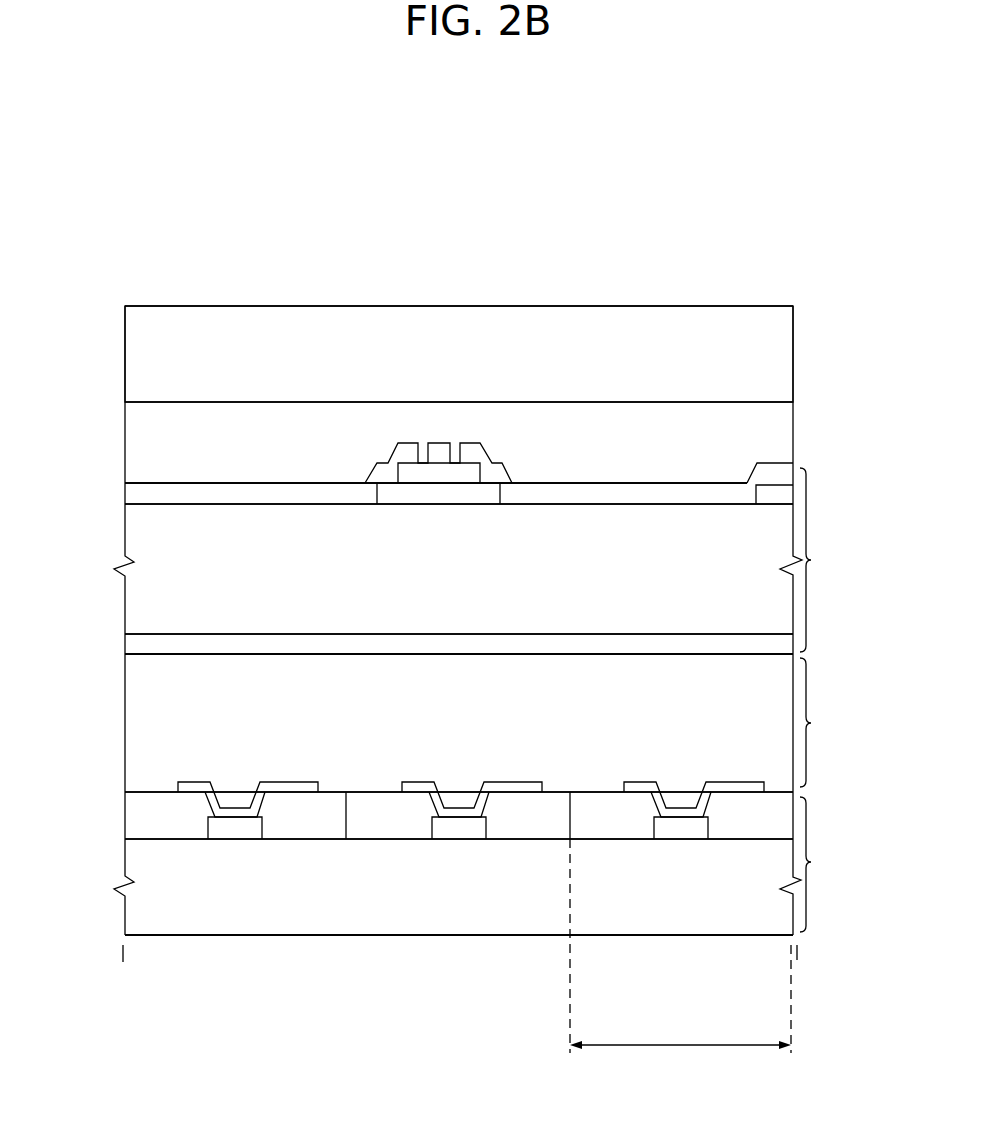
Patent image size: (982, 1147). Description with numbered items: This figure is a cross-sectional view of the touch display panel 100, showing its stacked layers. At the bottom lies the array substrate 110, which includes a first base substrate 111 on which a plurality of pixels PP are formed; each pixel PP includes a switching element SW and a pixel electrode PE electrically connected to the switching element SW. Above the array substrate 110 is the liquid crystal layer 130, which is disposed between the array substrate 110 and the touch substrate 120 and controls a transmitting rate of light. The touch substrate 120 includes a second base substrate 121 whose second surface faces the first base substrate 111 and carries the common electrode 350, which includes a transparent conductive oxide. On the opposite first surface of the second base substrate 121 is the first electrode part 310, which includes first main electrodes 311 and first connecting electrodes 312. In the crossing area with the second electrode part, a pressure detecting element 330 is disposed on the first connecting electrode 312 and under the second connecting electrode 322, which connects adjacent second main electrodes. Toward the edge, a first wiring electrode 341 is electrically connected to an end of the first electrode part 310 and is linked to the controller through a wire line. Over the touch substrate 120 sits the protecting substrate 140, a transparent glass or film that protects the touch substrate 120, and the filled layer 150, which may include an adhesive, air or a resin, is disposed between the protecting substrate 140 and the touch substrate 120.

The touch display panel 100 is at (468, 170).
The array substrate 110 is at (488, 863).
The first base substrate 111 is at (272, 890).
The touch substrate 120 is at (488, 561).
The second base substrate 121 is at (243, 540).
The liquid crystal layer 130 is at (488, 723).
The protecting substrate 140 is at (787, 341).
The filled layer 150 is at (787, 429).
The first electrode part 310 is at (459, 357).
The first main electrode 311 is at (310, 500).
The first connecting electrode 312 is at (383, 500).
The second connecting electrode 322 is at (440, 455).
The pressure detecting element 330 is at (472, 473).
The first wiring electrode 341 is at (772, 495).
The common electrode 350 is at (134, 648).
The switching element SW is at (460, 828).
The pixel electrode PE is at (520, 788).
The pixel PP is at (680, 946).